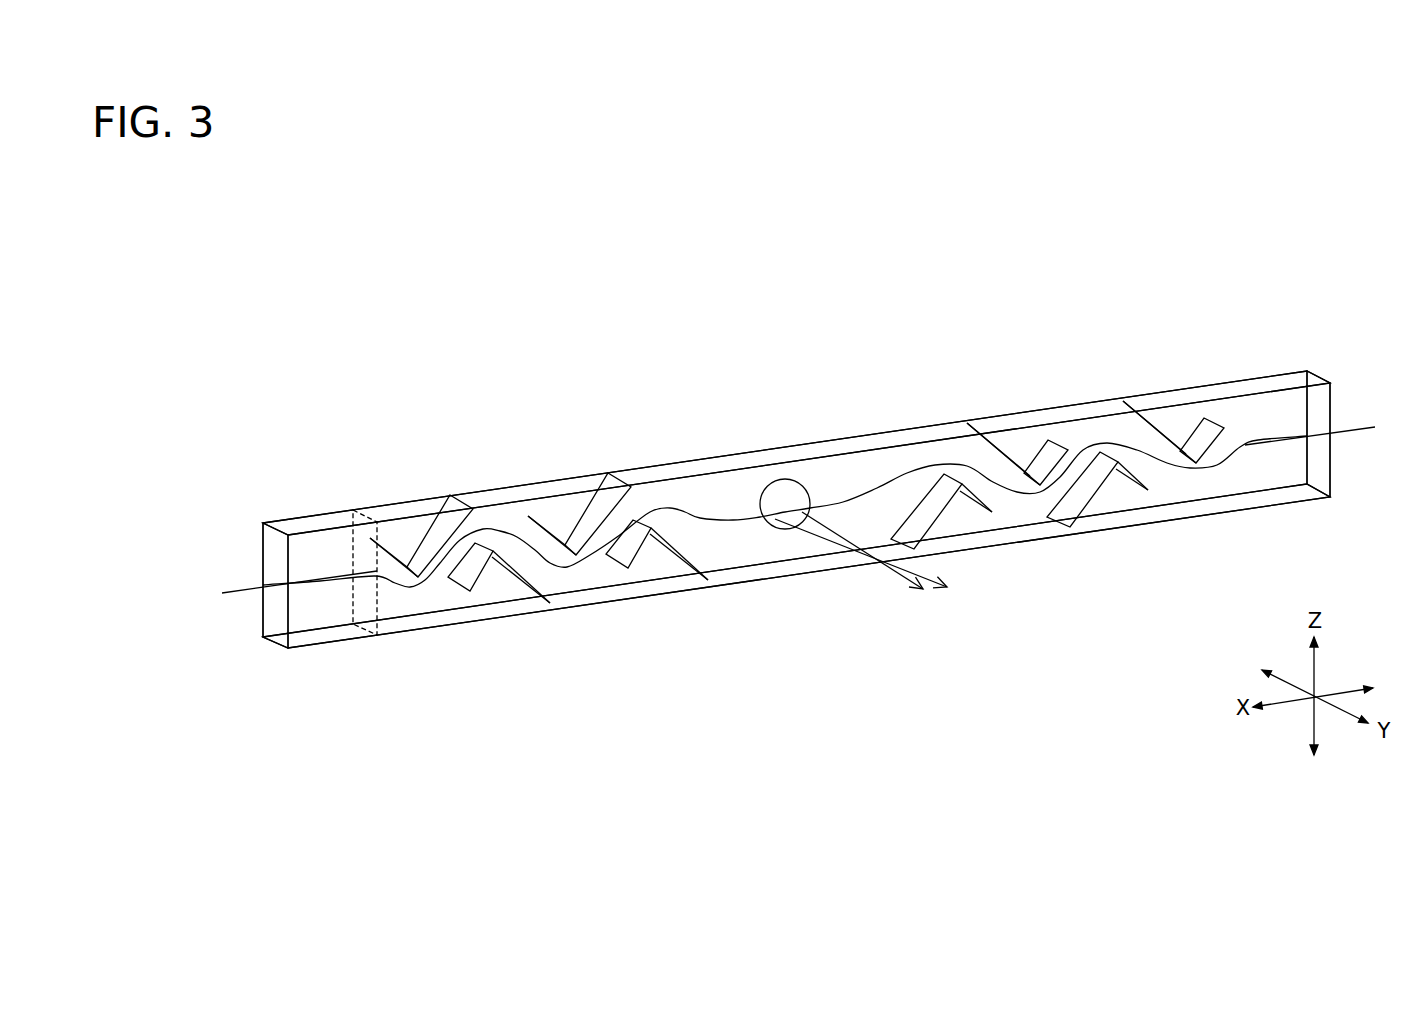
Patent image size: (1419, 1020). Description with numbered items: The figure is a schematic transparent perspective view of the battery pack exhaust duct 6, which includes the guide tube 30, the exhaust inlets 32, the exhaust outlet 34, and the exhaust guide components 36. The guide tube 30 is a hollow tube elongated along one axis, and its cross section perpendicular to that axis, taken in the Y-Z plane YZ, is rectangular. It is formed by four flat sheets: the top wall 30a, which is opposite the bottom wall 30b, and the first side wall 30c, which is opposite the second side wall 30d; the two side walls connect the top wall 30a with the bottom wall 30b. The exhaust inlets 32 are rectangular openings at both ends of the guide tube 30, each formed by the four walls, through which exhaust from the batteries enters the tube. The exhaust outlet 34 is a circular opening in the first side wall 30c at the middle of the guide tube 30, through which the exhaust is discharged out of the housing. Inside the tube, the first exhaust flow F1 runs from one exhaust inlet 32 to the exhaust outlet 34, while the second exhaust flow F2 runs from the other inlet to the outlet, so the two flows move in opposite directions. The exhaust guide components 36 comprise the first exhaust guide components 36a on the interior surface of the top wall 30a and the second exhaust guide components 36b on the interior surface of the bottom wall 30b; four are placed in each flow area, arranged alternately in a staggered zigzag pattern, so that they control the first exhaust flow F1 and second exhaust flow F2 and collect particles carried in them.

The battery pack exhaust duct 6 is at (810, 768).
The guide tube 30 is at (793, 525).
The top wall 30a is at (311, 527).
The bottom wall 30b is at (265, 633).
The first side wall 30c is at (308, 617).
The second side wall 30d is at (273, 553).
The exhaust inlets 32 is at (262, 605).
The exhaust outlet 34 is at (812, 482).
The exhaust guide components 36 is at (797, 465).
The first exhaust guide components 36a is at (1132, 401).
The second exhaust guide components 36b is at (1102, 498).
The first exhaust flow F1 is at (693, 514).
The second exhaust flow F2 is at (933, 465).
The Y-Z plane YZ is at (377, 600).